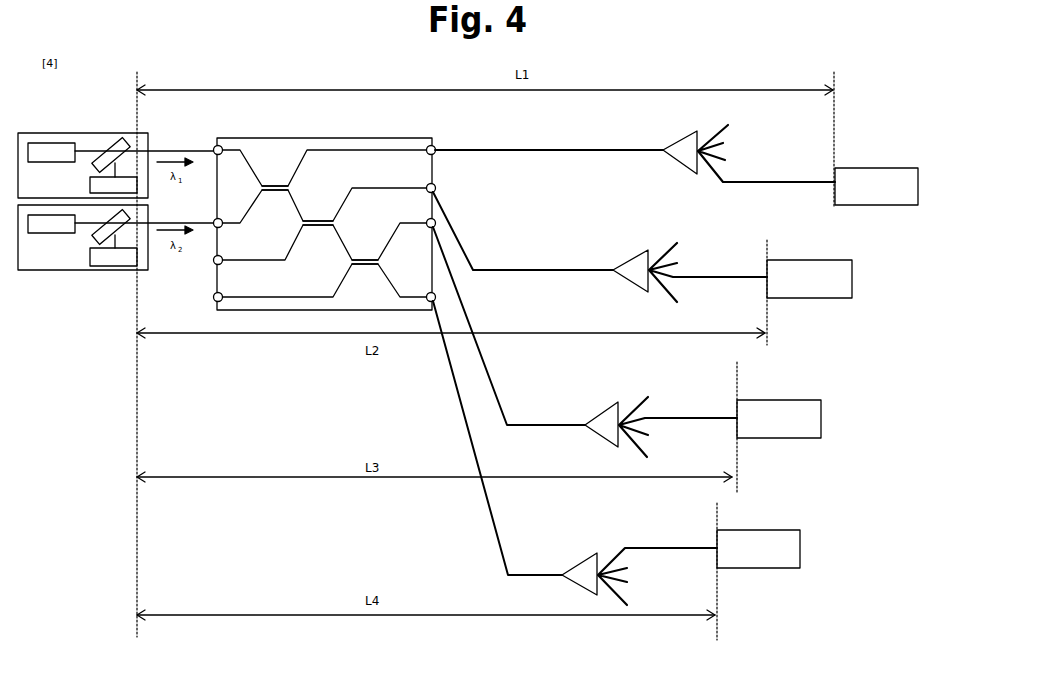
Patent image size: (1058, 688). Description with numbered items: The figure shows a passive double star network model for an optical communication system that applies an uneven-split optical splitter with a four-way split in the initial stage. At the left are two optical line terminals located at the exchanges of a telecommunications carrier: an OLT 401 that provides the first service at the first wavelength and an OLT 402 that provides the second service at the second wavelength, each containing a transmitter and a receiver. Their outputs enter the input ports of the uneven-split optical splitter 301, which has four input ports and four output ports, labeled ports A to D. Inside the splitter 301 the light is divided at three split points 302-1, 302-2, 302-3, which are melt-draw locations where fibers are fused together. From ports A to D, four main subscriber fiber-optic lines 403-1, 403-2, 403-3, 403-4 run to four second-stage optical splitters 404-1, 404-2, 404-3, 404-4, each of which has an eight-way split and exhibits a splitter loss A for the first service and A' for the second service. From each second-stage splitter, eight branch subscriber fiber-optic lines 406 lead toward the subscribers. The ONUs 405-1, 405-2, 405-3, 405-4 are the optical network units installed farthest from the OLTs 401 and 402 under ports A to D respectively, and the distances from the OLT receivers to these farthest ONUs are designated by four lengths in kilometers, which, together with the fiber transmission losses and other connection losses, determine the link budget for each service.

The OLT 401 is at (30, 133).
The OLT 402 is at (30, 270).
The uneven-split optical splitter 301 is at (326, 208).
The split point 302-1 is at (283, 170).
The split point 302-2 is at (318, 219).
The split point 302-3 is at (367, 258).
The main subscriber fiber-optic line 403-1 is at (513, 150).
The main subscriber fiber-optic line 403-2 is at (467, 252).
The main subscriber fiber-optic line 403-3 is at (502, 402).
The main subscriber fiber-optic line 403-4 is at (500, 535).
The second-stage optical splitter 404-1 is at (749, 142).
The second-stage optical splitter 404-2 is at (660, 248).
The second-stage optical splitter 404-3 is at (622, 402).
The second-stage optical splitter 404-4 is at (598, 595).
The ONU 405-1 is at (870, 168).
The ONU 405-2 is at (820, 260).
The ONU 405-3 is at (772, 400).
The ONU 405-4 is at (750, 530).
The branch subscriber fiber-optic lines 406 is at (735, 170).